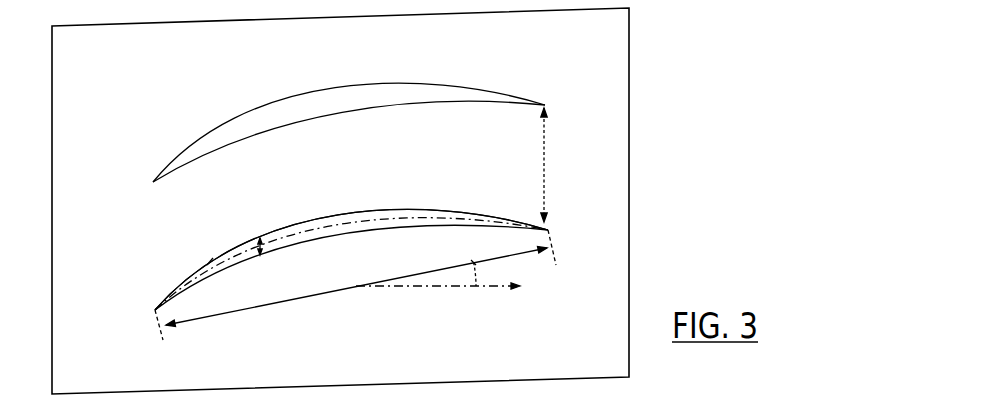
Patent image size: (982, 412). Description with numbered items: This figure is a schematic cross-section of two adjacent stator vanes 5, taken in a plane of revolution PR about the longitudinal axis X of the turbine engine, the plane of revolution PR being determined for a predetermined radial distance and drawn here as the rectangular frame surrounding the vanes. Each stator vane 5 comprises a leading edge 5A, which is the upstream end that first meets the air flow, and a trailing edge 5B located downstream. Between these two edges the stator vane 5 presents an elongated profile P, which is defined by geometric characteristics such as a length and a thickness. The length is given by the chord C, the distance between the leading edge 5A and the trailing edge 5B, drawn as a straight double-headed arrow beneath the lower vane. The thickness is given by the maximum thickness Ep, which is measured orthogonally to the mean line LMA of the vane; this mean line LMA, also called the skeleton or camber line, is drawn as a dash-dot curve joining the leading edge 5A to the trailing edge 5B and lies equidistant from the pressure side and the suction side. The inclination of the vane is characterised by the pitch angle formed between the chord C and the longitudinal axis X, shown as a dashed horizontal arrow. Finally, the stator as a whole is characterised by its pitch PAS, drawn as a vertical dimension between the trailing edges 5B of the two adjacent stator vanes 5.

The stator vane 5 is at (143, 163).
The leading edge 5A is at (155, 310).
The trailing edge 5B is at (548, 231).
The profile P is at (363, 209).
The plane of revolution PR is at (617, 43).
The pitch PAS is at (563, 165).
The mean line LMA is at (207, 258).
The maximum thickness Ep is at (258, 233).
The chord C is at (356, 287).
The longitudinal axis X is at (447, 288).